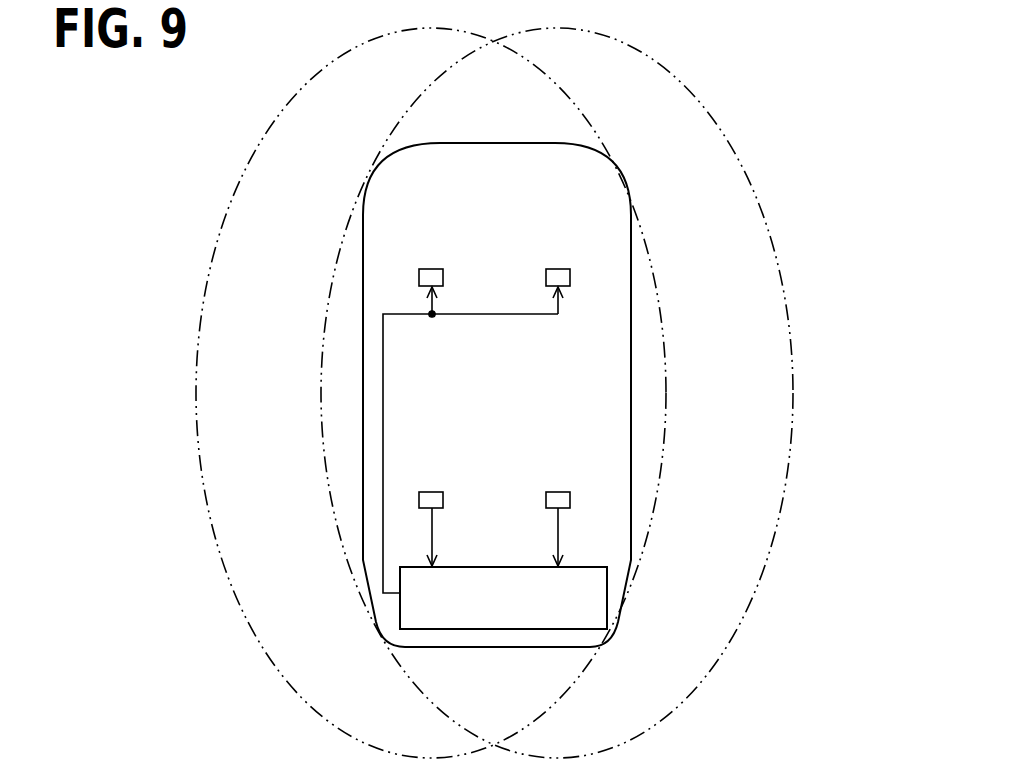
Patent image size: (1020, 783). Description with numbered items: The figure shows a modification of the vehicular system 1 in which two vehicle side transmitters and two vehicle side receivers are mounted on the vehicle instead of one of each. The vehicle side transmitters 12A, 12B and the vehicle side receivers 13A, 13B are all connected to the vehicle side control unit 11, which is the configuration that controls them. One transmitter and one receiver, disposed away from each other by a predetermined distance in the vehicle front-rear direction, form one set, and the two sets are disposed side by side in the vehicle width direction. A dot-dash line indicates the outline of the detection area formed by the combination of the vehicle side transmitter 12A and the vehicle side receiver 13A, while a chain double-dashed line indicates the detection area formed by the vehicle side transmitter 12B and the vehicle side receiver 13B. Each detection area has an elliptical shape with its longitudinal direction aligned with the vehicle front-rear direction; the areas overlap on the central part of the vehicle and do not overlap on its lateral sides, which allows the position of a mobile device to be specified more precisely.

The vehicular system 1 is at (484, 143).
The vehicle side control unit 11 is at (487, 567).
The vehicle side transmitter 12A is at (430, 268).
The vehicle side transmitter 12B is at (558, 269).
The vehicle side receiver 13A is at (431, 491).
The vehicle side receiver 13B is at (557, 491).